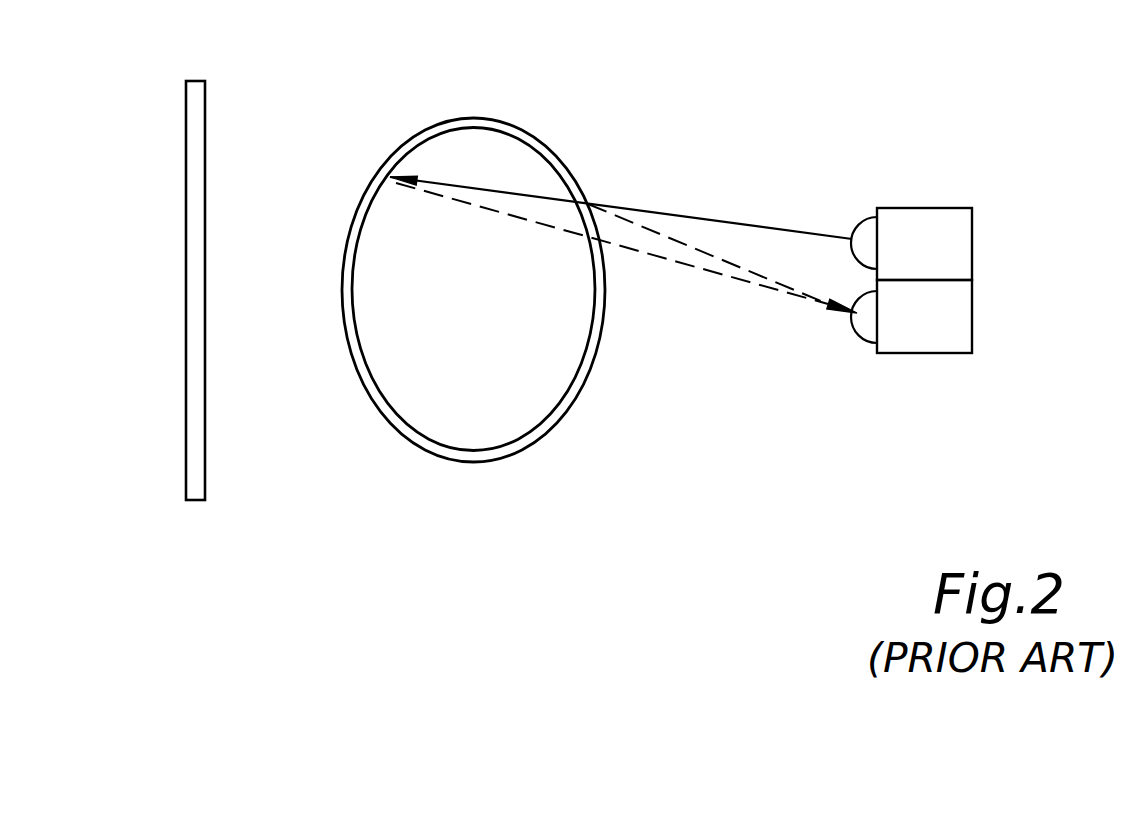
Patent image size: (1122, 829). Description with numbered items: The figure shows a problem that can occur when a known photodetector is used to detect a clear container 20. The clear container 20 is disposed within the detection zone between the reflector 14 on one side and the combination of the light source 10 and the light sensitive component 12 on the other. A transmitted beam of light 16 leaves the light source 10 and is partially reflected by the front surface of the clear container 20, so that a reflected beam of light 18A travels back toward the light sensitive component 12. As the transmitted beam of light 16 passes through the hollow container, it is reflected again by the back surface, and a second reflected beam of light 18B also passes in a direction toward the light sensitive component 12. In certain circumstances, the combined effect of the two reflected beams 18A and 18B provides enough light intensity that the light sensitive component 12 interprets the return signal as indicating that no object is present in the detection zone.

The light source 10 is at (917, 218).
The light sensitive component 12 is at (922, 340).
The reflector 14 is at (206, 98).
The transmitted beam of light 16 is at (725, 220).
The reflected beam of light 18A is at (648, 228).
The second reflected beam of light 18B is at (655, 257).
The clear container 20 is at (495, 118).